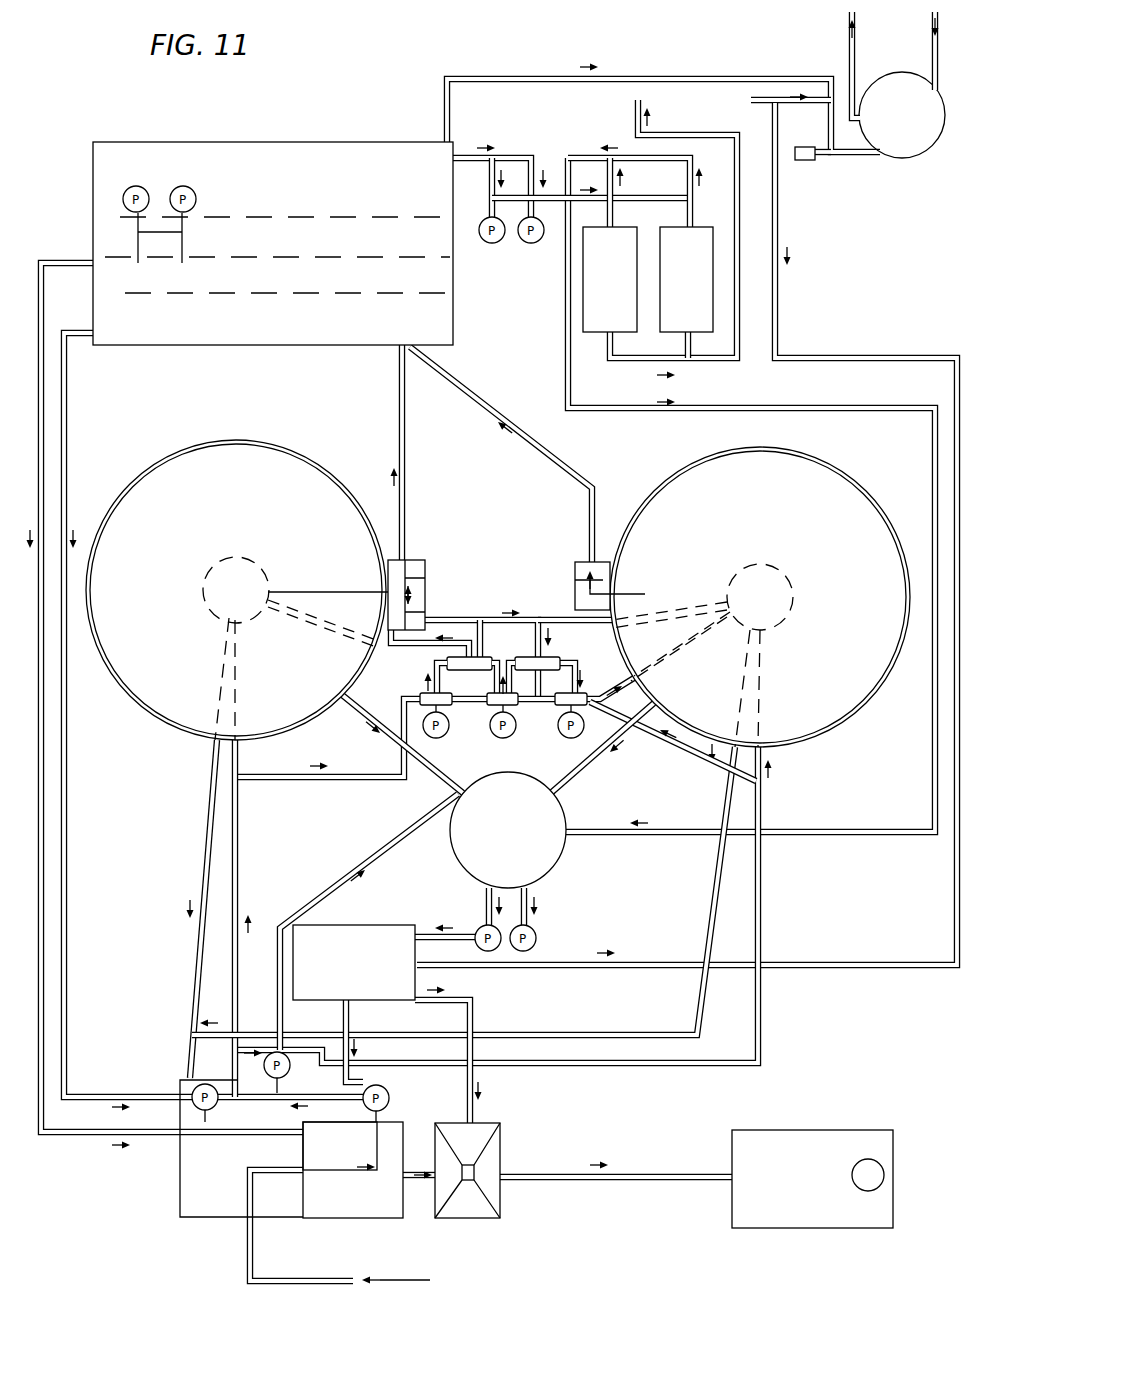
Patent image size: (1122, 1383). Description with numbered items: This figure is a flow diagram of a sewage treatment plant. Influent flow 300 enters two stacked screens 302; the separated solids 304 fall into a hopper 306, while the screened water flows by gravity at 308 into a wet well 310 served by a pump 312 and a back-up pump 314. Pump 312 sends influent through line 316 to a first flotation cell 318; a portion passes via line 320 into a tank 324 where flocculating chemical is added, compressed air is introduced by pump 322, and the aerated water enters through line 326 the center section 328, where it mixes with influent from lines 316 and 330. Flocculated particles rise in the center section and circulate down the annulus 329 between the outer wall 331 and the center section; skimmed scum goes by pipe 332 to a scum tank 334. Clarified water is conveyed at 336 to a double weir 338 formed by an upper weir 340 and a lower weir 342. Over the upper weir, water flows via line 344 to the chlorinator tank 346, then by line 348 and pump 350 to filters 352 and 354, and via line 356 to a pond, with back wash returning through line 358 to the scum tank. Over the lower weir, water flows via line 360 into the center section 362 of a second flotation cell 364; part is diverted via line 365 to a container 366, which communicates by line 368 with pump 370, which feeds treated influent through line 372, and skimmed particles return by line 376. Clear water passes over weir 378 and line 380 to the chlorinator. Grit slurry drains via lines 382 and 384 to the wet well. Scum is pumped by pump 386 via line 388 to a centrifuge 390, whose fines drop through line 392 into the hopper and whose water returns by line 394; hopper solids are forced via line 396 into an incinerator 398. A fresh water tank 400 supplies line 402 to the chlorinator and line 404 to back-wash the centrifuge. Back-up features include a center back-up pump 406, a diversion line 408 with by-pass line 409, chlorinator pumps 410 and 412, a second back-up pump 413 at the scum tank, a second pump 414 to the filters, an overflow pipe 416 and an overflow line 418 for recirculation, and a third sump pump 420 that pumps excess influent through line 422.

The influent flow 300 is at (313, 1283).
The screens 302 is at (348, 1159).
The separated solids 304 is at (425, 1180).
The hopper 306 is at (467, 1218).
The gravity flow to wet well 308 is at (388, 1118).
The wet well 310 is at (210, 1218).
The pump 312 is at (388, 1085).
The back-up pump 314 is at (193, 1087).
The line 316 is at (243, 870).
The first flotation cell 318 is at (252, 414).
The line 320 is at (245, 780).
The pump or compressor 322 is at (434, 745).
The tank 324 is at (480, 618).
The line 326 is at (400, 650).
The center section 328 is at (203, 597).
The annulus 329 is at (163, 476).
The line 330 is at (242, 743).
The outer wall 331 is at (333, 468).
The pipe 332 is at (437, 786).
The scum tank 334 is at (516, 862).
The clarified water conveyance 336 is at (333, 585).
The double weir 338 is at (427, 590).
The upper weir 340 is at (427, 568).
The lower weir 342 is at (392, 612).
The line 344 is at (408, 505).
The chlorinator tank 346 is at (231, 345).
The line 348 is at (516, 157).
The pump 350 is at (492, 243).
The filter 352 is at (618, 312).
The filter 354 is at (695, 312).
The line 356 is at (713, 360).
The line 358 is at (580, 158).
The line 360 is at (550, 618).
The center section 362 is at (792, 610).
The second flotation cell 364 is at (867, 490).
The line 365 is at (552, 636).
The container 366 is at (523, 657).
The line 368 is at (568, 664).
The pump 370 is at (570, 740).
The line 372 is at (659, 668).
The line 376 is at (608, 758).
The weir 378 is at (575, 572).
The line 380 is at (592, 542).
The line 382 is at (204, 858).
The line 384 is at (712, 877).
The pump 386 is at (537, 935).
The line 388 is at (425, 932).
The centrifuge 390 is at (362, 990).
The line 392 is at (473, 1010).
The line 394 is at (351, 1018).
The line 396 is at (690, 1175).
The incinerator 398 is at (815, 1185).
The fresh water tank 400 is at (907, 152).
The line 402 is at (708, 79).
The line 404 is at (670, 963).
The center back-up pump 406 is at (492, 728).
The line 408 is at (762, 877).
The by-pass line 409 is at (693, 760).
The second pump 410 is at (138, 185).
The pump 412 is at (183, 185).
The second back-up pump 413 is at (473, 930).
The second pump 414 is at (532, 243).
The overflow pipe 416 is at (70, 393).
The overflow line 418 is at (48, 417).
The third sump pump 420 is at (287, 1068).
The line 422 is at (350, 870).